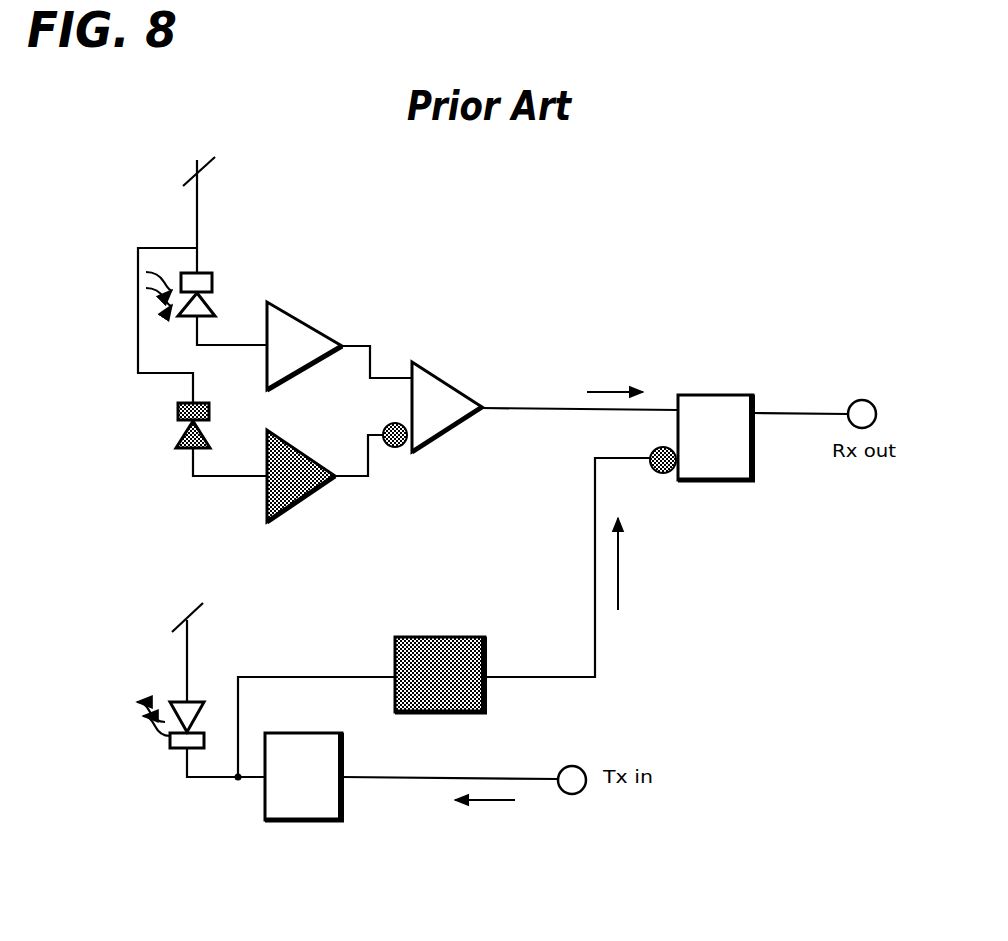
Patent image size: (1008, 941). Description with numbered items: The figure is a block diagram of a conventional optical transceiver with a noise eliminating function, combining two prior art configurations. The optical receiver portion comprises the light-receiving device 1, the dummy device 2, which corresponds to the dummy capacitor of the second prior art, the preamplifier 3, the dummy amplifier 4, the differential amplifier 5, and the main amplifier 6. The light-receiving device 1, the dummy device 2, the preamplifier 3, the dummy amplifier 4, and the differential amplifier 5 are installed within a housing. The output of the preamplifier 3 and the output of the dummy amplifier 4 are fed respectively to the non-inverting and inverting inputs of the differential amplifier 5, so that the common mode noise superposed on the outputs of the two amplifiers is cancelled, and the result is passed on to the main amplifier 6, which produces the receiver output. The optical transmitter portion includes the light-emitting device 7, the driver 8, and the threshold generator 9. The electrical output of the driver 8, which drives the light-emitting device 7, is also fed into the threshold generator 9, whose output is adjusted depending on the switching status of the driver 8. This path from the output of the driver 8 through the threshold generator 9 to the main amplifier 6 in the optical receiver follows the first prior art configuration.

The light-receiving device 1 is at (207, 303).
The dummy device 2 is at (182, 450).
The preamplifier 3 is at (303, 322).
The dummy amplifier 4 is at (307, 502).
The differential amplifier 5 is at (437, 372).
The main amplifier 6 is at (715, 395).
The light-emitting device 7 is at (172, 750).
The driver 8 is at (300, 820).
The threshold generator 9 is at (422, 637).